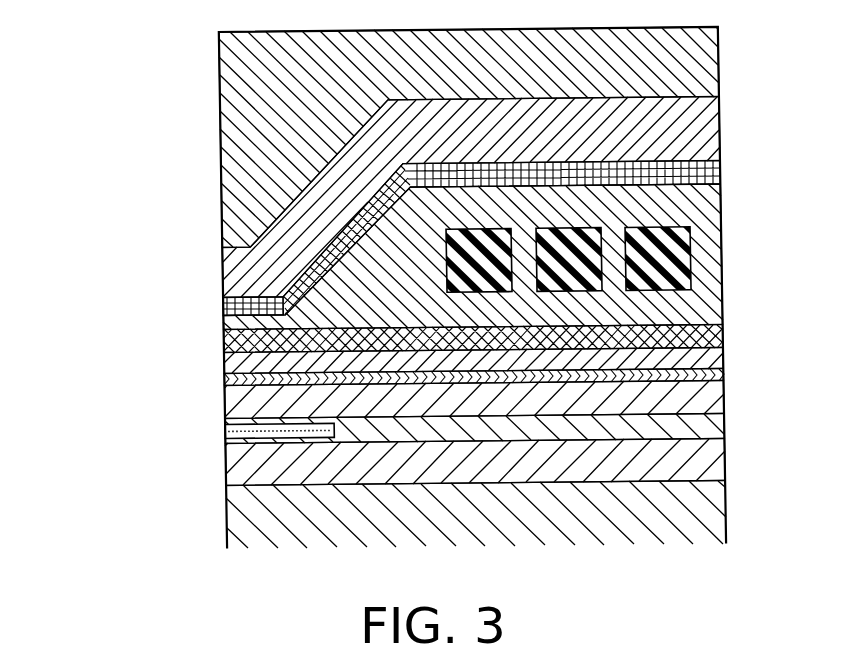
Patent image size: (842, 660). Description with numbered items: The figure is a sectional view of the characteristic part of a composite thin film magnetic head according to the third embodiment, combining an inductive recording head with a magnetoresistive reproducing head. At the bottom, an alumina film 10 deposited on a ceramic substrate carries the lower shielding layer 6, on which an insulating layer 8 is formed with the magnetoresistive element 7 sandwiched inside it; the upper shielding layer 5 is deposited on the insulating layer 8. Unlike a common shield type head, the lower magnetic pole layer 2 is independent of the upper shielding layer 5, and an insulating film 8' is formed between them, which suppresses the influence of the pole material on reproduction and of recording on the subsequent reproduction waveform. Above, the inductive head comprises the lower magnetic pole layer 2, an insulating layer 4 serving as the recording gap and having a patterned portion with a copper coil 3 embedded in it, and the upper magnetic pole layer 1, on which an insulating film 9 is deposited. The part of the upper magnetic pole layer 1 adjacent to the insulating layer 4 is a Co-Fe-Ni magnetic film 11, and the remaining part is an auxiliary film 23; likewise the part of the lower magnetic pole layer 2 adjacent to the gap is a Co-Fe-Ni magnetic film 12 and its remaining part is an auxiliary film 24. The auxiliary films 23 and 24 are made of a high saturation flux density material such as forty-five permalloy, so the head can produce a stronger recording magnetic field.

The upper magnetic pole layer 1 is at (97, 162).
The lower magnetic pole layer 2 is at (99, 295).
The copper coil 3 is at (683, 263).
The insulating layer 4 is at (705, 212).
The upper shielding layer 5 is at (710, 392).
The lower shielding layer 6 is at (235, 465).
The magnetoresistive element 7 is at (235, 432).
The insulating layer 8 is at (516, 435).
The insulating film 8' is at (516, 363).
The insulating film 9 is at (700, 68).
The alumina film 10 is at (722, 510).
The Co-Fe-Ni magnetic film 11 is at (235, 307).
The Co-Fe-Ni magnetic film 12 is at (225, 341).
The auxiliary film 23 is at (240, 268).
The auxiliary film 24 is at (243, 358).